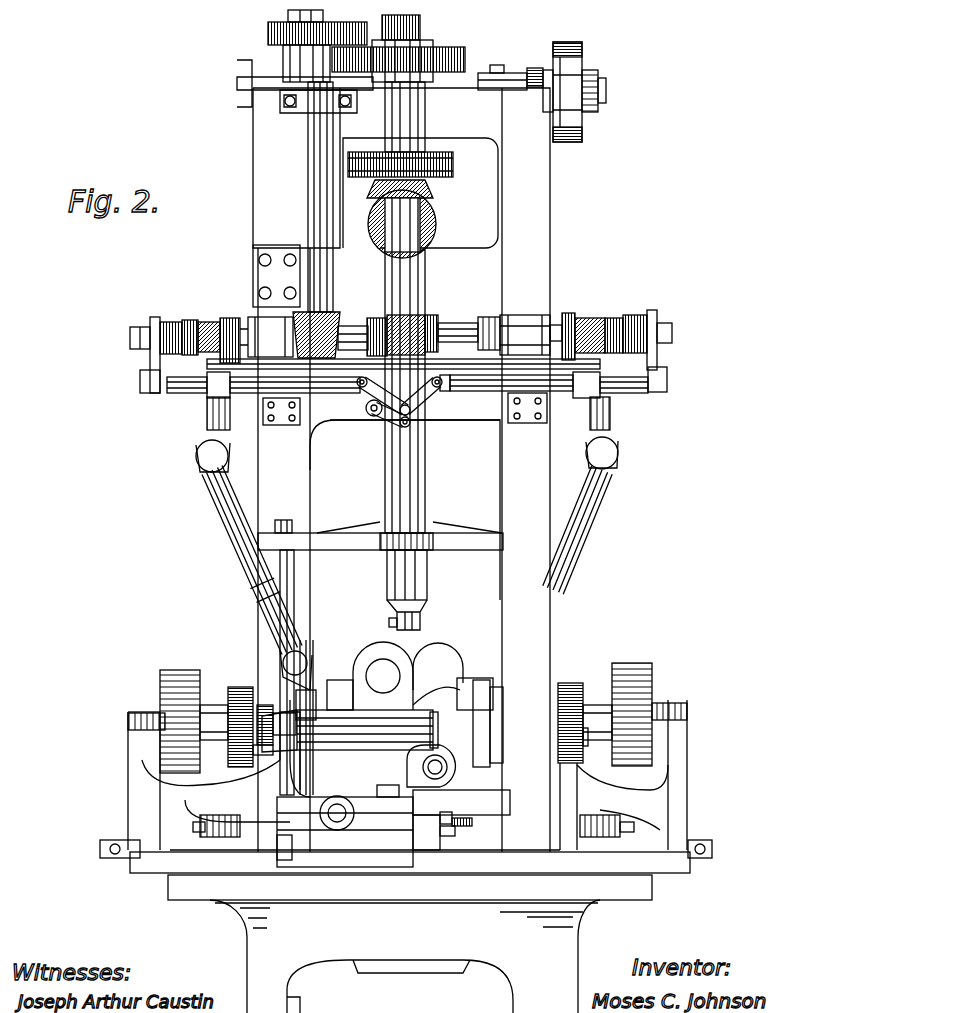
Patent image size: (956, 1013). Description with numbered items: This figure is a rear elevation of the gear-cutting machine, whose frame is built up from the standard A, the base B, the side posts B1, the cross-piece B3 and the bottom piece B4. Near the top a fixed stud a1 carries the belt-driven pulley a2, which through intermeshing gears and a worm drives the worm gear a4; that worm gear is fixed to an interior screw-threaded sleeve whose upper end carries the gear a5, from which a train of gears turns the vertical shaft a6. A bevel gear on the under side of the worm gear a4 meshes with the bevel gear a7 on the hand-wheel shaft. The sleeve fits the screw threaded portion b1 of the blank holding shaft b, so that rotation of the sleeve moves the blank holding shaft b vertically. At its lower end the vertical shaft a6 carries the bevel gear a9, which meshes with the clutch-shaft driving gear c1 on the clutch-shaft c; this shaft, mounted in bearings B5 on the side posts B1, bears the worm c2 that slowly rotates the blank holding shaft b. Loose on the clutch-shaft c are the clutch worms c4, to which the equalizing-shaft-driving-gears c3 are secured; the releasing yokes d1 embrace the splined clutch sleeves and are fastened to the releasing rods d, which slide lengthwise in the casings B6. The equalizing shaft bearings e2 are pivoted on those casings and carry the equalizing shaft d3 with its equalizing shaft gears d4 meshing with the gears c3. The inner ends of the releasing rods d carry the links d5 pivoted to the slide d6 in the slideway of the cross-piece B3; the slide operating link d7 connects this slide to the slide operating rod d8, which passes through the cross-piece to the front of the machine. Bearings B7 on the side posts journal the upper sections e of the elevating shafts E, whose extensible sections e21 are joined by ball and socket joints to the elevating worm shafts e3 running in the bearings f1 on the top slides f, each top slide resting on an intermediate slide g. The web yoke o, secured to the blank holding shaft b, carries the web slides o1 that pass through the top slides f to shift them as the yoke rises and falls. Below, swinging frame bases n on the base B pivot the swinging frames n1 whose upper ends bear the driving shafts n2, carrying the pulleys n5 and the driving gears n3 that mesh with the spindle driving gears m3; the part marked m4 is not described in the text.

The standard A is at (405, 956).
The base B is at (410, 879).
The side posts B1 is at (258, 182).
The cross-piece B3 is at (448, 406).
The bottom piece B4 is at (461, 822).
The bearings B5 is at (270, 322).
The casings B6 is at (305, 410).
The bearings B7 is at (210, 375).
The fixed stud a1 is at (598, 90).
The pulley a2 is at (583, 63).
The worm gear a4 is at (455, 160).
The gear a5 is at (467, 60).
The vertical shaft a6 is at (318, 165).
The bevel gear a7 is at (437, 213).
The bevel gear a9 is at (340, 318).
The blank holding shaft b is at (420, 283).
The screw threaded portion b1 is at (422, 27).
The clutch-shaft c is at (457, 328).
The clutch-shaft driving gear c1 is at (300, 313).
The worm c2 is at (428, 318).
The equalizing-shaft-driving-gears c3 is at (233, 318).
The clutch worms c4 is at (220, 322).
The releasing rods d is at (163, 393).
The releasing yokes d1 is at (152, 363).
The equalizing shaft d3 is at (347, 360).
The equalizing shaft gears d4 is at (240, 394).
The links d5 is at (376, 415).
The slide d6 is at (403, 400).
The slide operating link d7 is at (398, 426).
The slide operating rod d8 is at (365, 413).
The upper sections e is at (222, 425).
The equalizing shaft bearings e2 is at (213, 410).
The elevating worm shafts e3 is at (287, 680).
The extensible sections e21 is at (233, 530).
The elevating shafts E is at (402, 560).
The web yoke o is at (380, 530).
The web slides o1 is at (297, 577).
The top slides f is at (358, 800).
The bearings f1 is at (313, 693).
The intermediate slide g is at (382, 807).
The swinging frame bases n is at (408, 846).
The swinging frames n1 is at (133, 758).
The driving shafts n2 is at (150, 718).
The driving gears n3 is at (240, 694).
The pulleys n5 is at (178, 677).
The spindle driving gears m3 is at (243, 772).
The pinion m4 is at (265, 708).